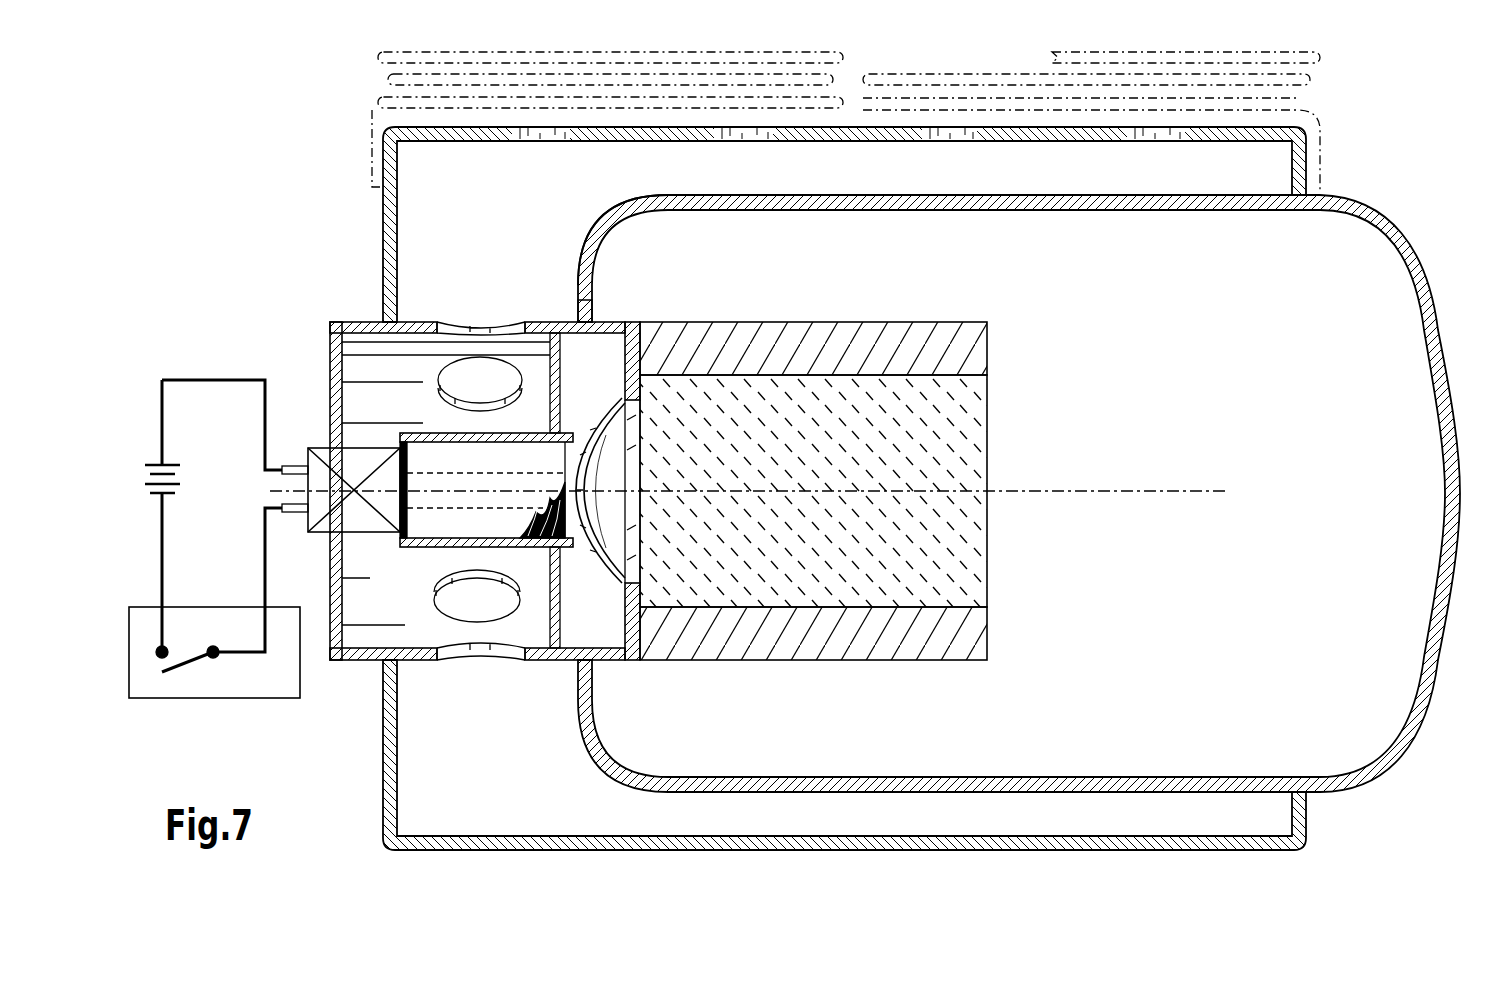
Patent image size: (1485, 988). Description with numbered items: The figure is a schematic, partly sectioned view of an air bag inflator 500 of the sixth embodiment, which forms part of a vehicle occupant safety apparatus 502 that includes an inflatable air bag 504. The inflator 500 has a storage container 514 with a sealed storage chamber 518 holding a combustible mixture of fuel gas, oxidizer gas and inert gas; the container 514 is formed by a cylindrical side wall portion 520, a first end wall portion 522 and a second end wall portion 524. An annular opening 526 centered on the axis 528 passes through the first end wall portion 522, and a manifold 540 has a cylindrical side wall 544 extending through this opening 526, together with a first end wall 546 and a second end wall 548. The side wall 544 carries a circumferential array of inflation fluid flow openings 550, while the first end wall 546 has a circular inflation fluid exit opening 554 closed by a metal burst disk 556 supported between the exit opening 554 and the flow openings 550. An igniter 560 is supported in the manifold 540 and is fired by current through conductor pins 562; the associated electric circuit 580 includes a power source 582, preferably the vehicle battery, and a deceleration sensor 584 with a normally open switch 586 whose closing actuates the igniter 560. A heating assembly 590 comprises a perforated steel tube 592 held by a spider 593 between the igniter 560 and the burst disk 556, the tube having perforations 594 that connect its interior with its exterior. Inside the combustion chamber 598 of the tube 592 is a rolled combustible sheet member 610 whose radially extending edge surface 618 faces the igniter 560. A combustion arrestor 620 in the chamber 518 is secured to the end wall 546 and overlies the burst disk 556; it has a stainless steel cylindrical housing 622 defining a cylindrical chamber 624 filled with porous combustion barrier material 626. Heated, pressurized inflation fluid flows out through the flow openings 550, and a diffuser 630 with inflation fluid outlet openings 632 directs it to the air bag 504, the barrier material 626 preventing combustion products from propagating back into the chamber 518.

The air bag inflator 500 is at (250, 266).
The vehicle occupant safety apparatus 502 is at (232, 199).
The air bag 504 is at (377, 62).
The storage container 514 is at (1416, 232).
The storage chamber 518 is at (1172, 287).
The cylindrical side wall portion 520 is at (1073, 210).
The first end wall portion 522 is at (600, 268).
The second end wall portion 524 is at (1372, 226).
The annular opening 526 is at (603, 322).
The axis 528 is at (1113, 493).
The manifold 540 is at (465, 498).
The cylindrical side wall 544 is at (550, 334).
The first end wall 546 is at (643, 388).
The second end wall 548 is at (330, 382).
The inflation fluid flow openings 550 is at (467, 649).
The inflation fluid exit opening 554 is at (627, 582).
The burst disk 556 is at (590, 566).
The igniter 560 is at (305, 526).
The conductor pins 562 is at (286, 508).
The electric circuit 580 is at (194, 547).
The power source 582 is at (145, 475).
The deceleration sensor 584 is at (188, 698).
The normally open switch 586 is at (200, 660).
The heating assembly 590 is at (423, 418).
The perforated steel tube 592 is at (560, 408).
The spider 593 is at (510, 656).
The perforations 594 is at (473, 433).
The combustion chamber 598 is at (463, 482).
The combustible sheet member 610 is at (477, 522).
The radially extending edge surface 618 is at (400, 512).
The combustion arrestor 620 is at (868, 468).
The cylindrical housing 622 is at (862, 322).
The cylindrical chamber 624 is at (950, 607).
The combustion barrier material 626 is at (920, 512).
The diffuser 630 is at (380, 236).
The inflation fluid outlet openings 632 is at (1160, 137).